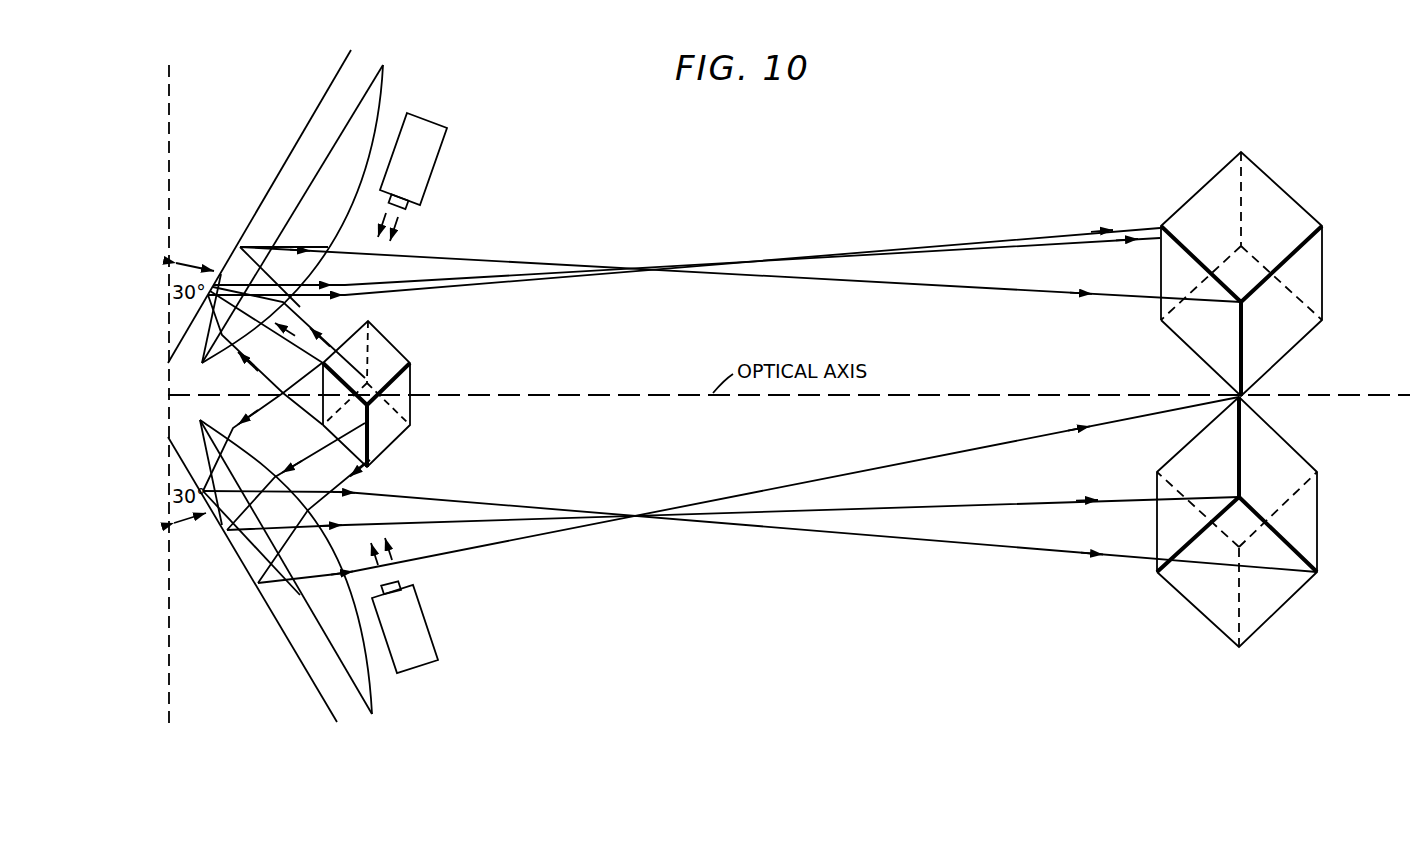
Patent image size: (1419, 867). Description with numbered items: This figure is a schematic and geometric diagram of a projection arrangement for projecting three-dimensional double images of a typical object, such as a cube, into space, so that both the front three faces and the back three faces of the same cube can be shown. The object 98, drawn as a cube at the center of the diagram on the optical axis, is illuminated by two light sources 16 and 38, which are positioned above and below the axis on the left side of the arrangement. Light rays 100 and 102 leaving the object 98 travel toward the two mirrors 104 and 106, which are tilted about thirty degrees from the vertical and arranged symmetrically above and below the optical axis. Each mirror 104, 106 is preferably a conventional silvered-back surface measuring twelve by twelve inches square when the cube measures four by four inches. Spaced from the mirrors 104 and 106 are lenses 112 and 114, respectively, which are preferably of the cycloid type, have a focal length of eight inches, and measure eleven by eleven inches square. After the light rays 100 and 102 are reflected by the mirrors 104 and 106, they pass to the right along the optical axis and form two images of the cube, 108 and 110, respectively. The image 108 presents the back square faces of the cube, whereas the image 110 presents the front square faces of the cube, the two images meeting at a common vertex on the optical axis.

The light source 16 is at (428, 167).
The light source 38 is at (422, 627).
The object 98 is at (387, 350).
The light ray 100 is at (301, 318).
The light ray 102 is at (243, 414).
The mirror 104 is at (295, 158).
The mirror 106 is at (292, 625).
The image 108 is at (1320, 300).
The image 110 is at (1318, 517).
The lens 112 is at (383, 95).
The lens 114 is at (374, 693).